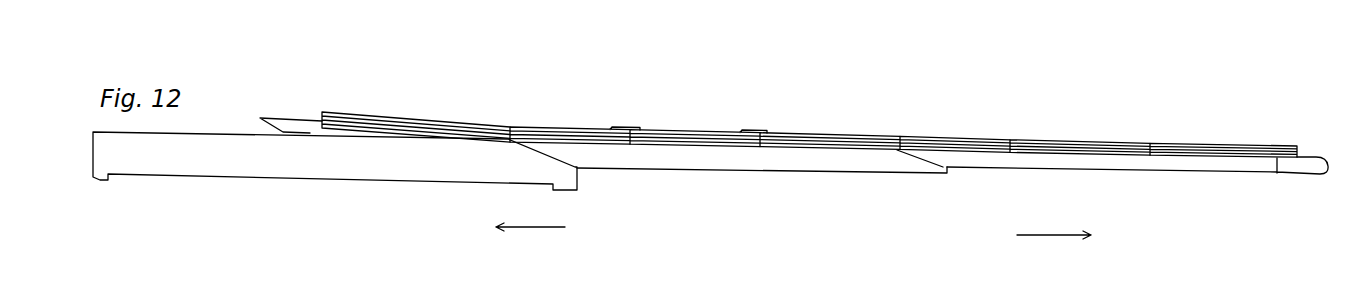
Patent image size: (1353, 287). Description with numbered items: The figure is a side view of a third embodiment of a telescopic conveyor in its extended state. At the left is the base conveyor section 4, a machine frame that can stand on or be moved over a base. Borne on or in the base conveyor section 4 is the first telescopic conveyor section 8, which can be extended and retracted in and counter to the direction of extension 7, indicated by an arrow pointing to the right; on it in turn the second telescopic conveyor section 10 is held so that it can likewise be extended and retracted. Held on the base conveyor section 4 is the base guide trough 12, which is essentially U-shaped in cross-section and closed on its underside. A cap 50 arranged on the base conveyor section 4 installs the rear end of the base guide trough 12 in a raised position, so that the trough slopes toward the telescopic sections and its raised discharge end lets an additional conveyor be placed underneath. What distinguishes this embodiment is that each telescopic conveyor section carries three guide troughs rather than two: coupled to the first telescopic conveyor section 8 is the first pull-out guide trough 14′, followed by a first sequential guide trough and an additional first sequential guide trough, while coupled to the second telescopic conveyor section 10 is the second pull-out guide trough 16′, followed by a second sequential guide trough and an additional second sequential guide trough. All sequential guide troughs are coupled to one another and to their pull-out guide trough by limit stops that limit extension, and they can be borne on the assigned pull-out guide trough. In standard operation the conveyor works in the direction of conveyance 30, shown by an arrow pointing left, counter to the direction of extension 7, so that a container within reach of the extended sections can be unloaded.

The base conveyor section 4 is at (323, 160).
The first telescopic conveyor section 8 is at (780, 160).
The second telescopic conveyor section 10 is at (1135, 165).
The base guide trough 12 is at (420, 120).
The first pull-out guide trough 14′ is at (830, 132).
The second pull-out guide trough 16′ is at (1215, 147).
The cap 50 is at (288, 118).
The direction of conveyance 30 is at (530, 227).
The direction of extension 7 is at (1053, 235).